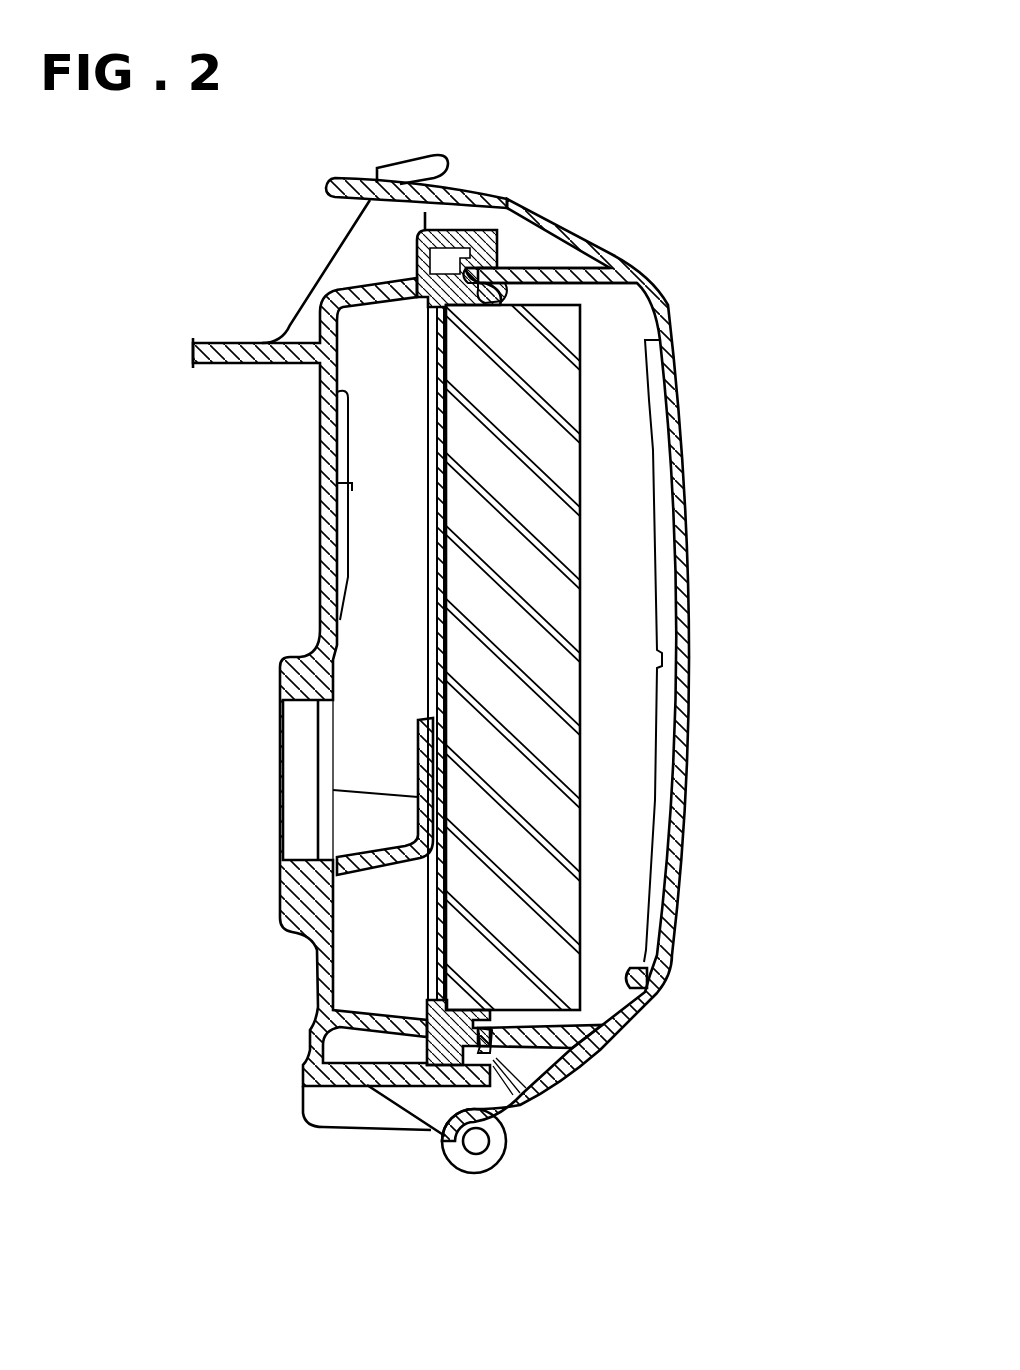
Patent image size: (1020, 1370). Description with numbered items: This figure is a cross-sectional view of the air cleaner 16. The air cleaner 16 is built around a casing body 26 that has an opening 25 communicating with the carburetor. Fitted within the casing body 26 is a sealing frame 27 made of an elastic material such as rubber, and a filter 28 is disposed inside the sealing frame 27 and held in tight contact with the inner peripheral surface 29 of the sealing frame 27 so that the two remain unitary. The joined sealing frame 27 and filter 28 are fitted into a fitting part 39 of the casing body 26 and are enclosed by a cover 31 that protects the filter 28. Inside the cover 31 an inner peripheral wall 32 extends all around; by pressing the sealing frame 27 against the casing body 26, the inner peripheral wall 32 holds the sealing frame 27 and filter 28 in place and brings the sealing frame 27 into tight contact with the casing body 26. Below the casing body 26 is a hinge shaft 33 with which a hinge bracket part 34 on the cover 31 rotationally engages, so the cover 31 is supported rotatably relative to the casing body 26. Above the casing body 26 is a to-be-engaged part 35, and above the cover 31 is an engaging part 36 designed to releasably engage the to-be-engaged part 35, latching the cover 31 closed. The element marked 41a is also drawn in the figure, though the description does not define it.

The air cleaner 16 is at (765, 685).
The opening 25 is at (310, 703).
The casing body 26 is at (305, 282).
The sealing frame 27 is at (509, 240).
The filter 28 is at (618, 413).
The inner peripheral surface 29 is at (490, 330).
The cover 31 is at (718, 458).
The inner peripheral wall 32 is at (550, 268).
The hinge shaft 33 is at (474, 1150).
The hinge bracket part 34 is at (442, 1146).
The to-be-engaged part 35 is at (413, 158).
The engaging part 36 is at (347, 177).
The fitting part 39 is at (529, 250).
The panel holder 41a is at (500, 327).